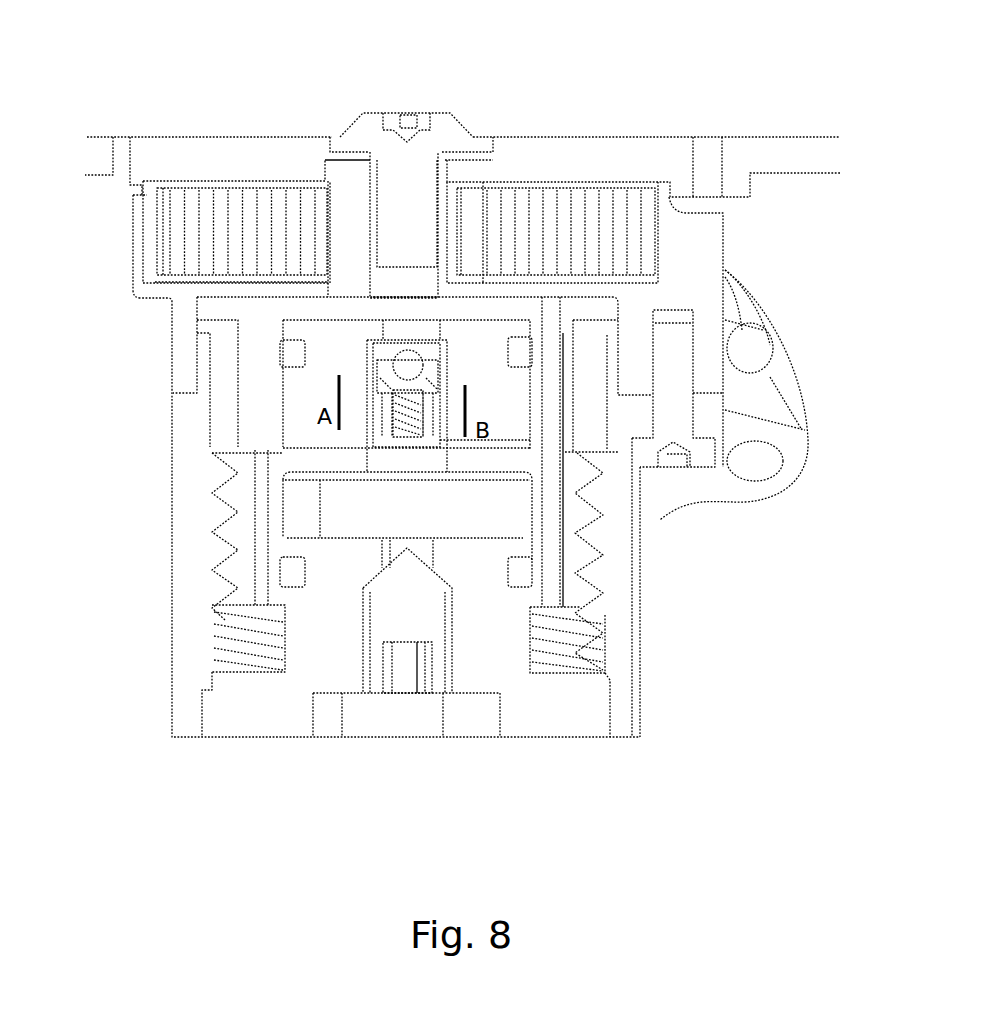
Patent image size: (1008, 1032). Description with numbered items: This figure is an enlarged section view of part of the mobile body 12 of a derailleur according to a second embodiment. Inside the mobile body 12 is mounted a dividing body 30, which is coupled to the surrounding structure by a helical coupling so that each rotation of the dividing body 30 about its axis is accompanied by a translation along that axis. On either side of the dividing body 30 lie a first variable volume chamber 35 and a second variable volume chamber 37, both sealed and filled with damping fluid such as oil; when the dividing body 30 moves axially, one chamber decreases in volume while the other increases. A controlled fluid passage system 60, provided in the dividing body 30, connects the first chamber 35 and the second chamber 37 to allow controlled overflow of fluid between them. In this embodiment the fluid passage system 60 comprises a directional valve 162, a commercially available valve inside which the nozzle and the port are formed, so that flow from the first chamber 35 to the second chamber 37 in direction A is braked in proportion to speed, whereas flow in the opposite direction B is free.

The mobile body 12 is at (172, 124).
The directional valve 162 is at (358, 336).
The controlled fluid passage system 60 is at (483, 303).
The first variable volume chamber 35 is at (413, 330).
The dividing body 30 is at (606, 498).
The second variable volume chamber 37 is at (498, 508).